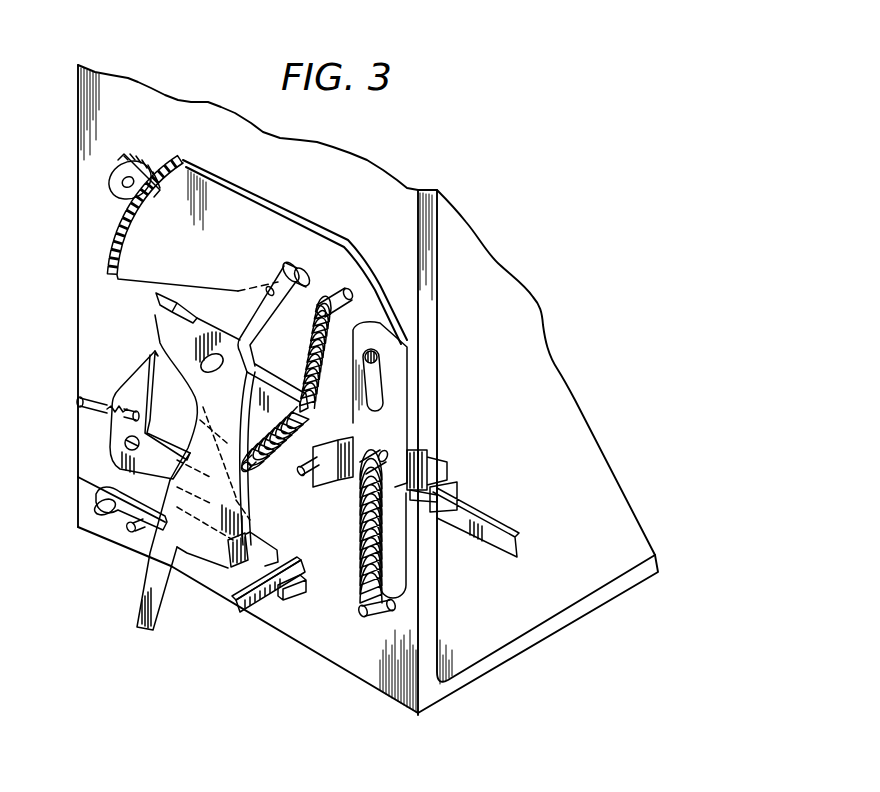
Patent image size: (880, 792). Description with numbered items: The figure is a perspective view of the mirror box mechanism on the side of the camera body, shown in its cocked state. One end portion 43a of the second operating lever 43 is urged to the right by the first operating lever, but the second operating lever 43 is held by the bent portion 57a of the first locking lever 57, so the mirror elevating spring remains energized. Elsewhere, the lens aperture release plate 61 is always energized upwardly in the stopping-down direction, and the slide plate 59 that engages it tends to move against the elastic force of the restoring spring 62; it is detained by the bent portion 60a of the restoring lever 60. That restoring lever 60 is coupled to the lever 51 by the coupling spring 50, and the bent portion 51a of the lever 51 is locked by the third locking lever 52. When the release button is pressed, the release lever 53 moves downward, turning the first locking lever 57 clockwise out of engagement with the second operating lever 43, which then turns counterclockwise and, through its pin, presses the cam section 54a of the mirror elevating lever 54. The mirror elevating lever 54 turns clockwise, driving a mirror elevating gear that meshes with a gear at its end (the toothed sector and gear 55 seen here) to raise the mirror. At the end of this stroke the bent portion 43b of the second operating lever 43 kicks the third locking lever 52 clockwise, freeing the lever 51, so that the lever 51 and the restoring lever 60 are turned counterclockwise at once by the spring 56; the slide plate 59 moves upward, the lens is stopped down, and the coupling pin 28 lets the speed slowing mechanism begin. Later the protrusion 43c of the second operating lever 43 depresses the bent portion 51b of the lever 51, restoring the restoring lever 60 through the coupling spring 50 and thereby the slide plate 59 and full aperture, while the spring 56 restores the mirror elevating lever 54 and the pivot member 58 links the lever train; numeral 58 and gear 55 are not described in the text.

The coupling pin 28 is at (305, 474).
The second operating lever 43 is at (205, 518).
The one end portion of the second operating lever 43a is at (140, 613).
The bent portion of the second operating lever 43b is at (157, 303).
The protrusion of the second operating lever 43c is at (158, 487).
The coupling spring 50 is at (278, 455).
The lever 51 is at (267, 407).
The bent portion of the lever 51a is at (240, 486).
The bent portion of the lever 51b is at (125, 443).
The third locking lever 52 is at (147, 360).
The release lever 53 is at (250, 602).
The mirror elevating lever 54 is at (225, 198).
The cam section 54a is at (297, 263).
The gear 55 is at (112, 178).
The spring 56 is at (317, 330).
The first locking lever 57 is at (293, 594).
The bent portion of the first locking lever 57a is at (240, 562).
The rod 58 is at (308, 265).
The slide plate 59 is at (392, 423).
The restoring lever 60 is at (427, 460).
The bent portion of the restoring lever 60a is at (428, 483).
The lens aperture release plate 61 is at (507, 530).
The restoring spring 62 is at (380, 577).